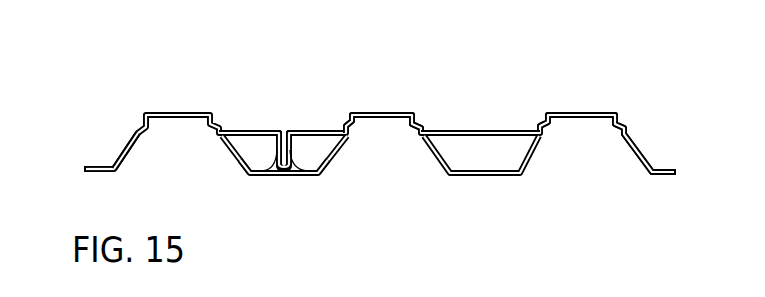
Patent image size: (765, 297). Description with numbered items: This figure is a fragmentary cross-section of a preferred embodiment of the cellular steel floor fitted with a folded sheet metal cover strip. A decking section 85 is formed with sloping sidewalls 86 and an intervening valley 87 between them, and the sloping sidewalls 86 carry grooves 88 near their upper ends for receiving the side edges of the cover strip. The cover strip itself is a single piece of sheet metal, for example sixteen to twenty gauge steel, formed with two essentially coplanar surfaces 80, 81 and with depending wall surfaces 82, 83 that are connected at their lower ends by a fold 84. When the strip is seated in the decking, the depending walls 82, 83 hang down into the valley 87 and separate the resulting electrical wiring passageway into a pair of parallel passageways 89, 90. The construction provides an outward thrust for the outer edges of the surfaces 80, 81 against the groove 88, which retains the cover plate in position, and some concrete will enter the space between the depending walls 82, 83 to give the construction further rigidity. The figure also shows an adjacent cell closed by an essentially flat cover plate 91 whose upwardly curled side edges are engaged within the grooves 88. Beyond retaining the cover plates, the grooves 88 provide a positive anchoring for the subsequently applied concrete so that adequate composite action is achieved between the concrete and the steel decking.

The coplanar surface 80 is at (250, 131).
The coplanar surface 81 is at (306, 131).
The depending wall surface 82 is at (259, 178).
The depending wall surface 83 is at (319, 177).
The fold 84 is at (282, 178).
The decking section 85 is at (134, 110).
The sloping sidewall 86 is at (125, 148).
The valley 87 is at (104, 173).
The groove 88 is at (417, 137).
The parallel passageway 89 is at (240, 148).
The parallel passageway 90 is at (328, 148).
The flat cover plate 91 is at (481, 131).